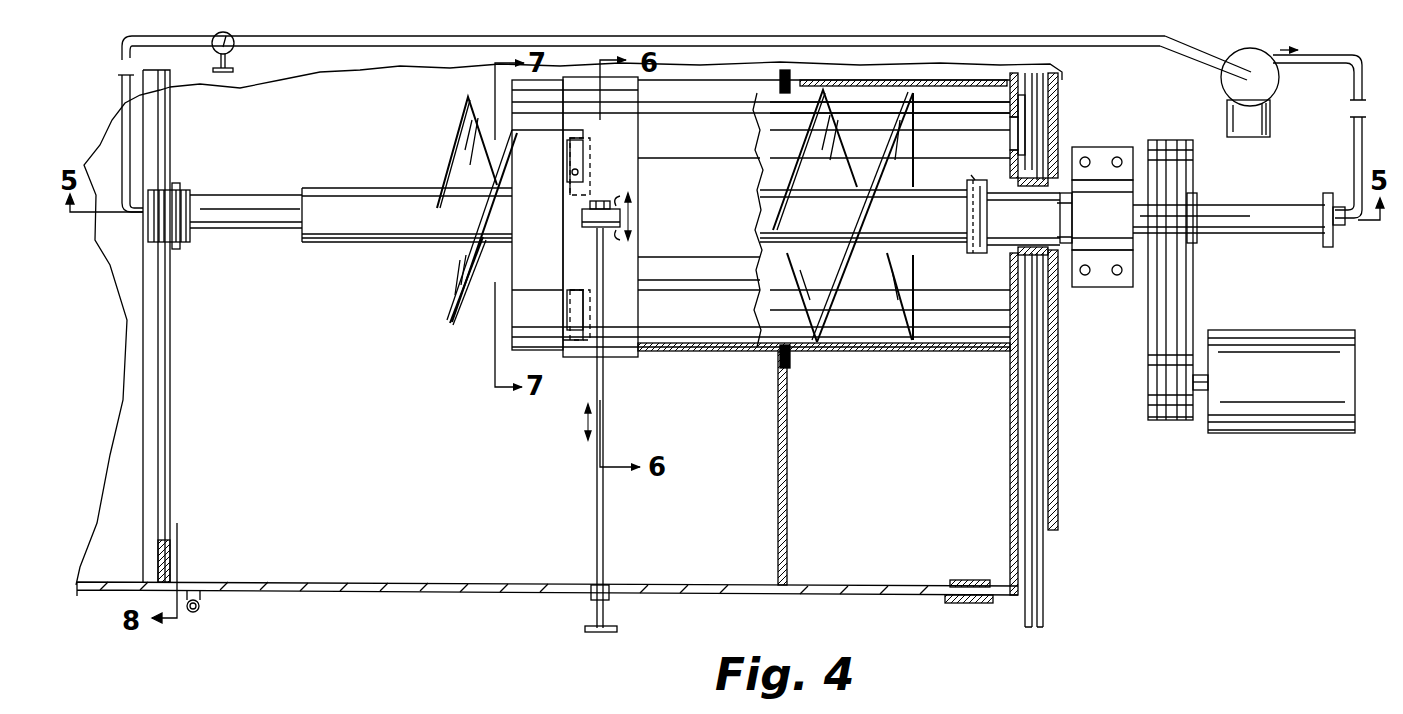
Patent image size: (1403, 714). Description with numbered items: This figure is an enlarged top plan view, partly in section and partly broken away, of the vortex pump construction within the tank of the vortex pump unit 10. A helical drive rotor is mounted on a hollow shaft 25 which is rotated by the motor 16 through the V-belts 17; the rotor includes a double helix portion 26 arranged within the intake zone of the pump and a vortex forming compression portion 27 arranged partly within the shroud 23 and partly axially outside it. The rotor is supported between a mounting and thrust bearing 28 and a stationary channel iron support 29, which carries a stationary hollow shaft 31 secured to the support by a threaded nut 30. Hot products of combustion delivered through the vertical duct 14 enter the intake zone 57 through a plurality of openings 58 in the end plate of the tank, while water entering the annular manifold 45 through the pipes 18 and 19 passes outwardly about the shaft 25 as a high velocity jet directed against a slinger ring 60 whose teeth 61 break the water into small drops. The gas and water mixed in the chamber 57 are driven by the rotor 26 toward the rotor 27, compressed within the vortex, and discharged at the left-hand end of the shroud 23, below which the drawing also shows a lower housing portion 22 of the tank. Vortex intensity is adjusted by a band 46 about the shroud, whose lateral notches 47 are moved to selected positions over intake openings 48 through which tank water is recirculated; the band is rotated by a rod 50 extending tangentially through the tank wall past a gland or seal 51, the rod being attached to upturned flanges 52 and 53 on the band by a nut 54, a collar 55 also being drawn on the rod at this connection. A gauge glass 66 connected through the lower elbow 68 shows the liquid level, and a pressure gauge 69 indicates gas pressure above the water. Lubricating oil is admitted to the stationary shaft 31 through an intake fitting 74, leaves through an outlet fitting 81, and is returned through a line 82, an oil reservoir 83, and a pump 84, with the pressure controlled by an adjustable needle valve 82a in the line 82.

The vortex pump unit 10 is at (472, 597).
The vertical duct 14 is at (1060, 464).
The motor 16 is at (1316, 392).
The V-belts 17 is at (1185, 318).
The pipe 18 is at (1045, 577).
The pipe 19 is at (1060, 104).
The lower housing 22 is at (788, 462).
The shroud 23 is at (745, 351).
The shaft 25 is at (398, 245).
The double helix portion 26 is at (832, 346).
The vortex forming compression portion 27 is at (450, 312).
The mounting and thrust bearing 28 is at (1120, 180).
The channel iron support 29 is at (172, 422).
The threaded nut 30 is at (178, 188).
The stationary hollow shaft 31 is at (252, 238).
The annular manifold 45 is at (1060, 284).
The band 46 is at (626, 358).
The lateral notches 47 is at (578, 275).
The intake openings 48 is at (567, 176).
The rod 50 is at (604, 430).
The gland or seal 51 is at (592, 600).
The upturned flange 52 is at (624, 232).
The upturned flange 53 is at (616, 206).
The nut 54 is at (598, 200).
The collar 55 is at (620, 216).
The intake zone 57 is at (962, 164).
The openings 58 is at (1012, 128).
The slinger ring 60 is at (972, 255).
The teeth 61 is at (971, 178).
The gauge glass 66 is at (196, 613).
The lower elbow 68 is at (203, 601).
The pressure gauge 69 is at (965, 604).
The intake fitting 74 is at (1336, 248).
The outlet fitting 81 is at (145, 216).
The line 82 is at (124, 52).
The adjustable needle valve 82a is at (233, 72).
The oil reservoir 83 is at (1272, 122).
The pump 84 is at (1275, 84).